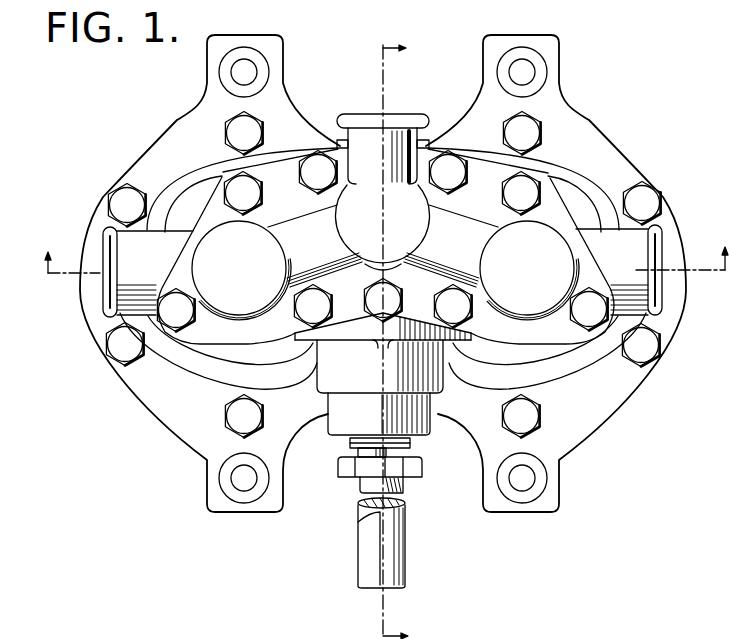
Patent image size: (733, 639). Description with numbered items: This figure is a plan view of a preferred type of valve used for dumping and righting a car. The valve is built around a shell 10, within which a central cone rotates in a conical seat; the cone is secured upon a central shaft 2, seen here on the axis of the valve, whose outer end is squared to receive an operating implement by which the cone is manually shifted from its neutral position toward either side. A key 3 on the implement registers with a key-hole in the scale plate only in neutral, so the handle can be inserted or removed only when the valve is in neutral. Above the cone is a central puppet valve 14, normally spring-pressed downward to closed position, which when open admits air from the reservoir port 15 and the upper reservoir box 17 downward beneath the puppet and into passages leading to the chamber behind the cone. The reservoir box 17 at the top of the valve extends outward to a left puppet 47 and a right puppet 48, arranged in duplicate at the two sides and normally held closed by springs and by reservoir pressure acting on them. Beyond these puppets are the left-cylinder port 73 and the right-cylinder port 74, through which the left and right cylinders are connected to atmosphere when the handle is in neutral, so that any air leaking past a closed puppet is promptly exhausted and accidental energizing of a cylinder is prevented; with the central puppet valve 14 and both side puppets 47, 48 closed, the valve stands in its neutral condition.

The central shaft 2 is at (403, 483).
The key 3 is at (377, 341).
The shell 10 is at (342, 421).
The central puppet valve 14 is at (383, 227).
The reservoir port 15 is at (393, 118).
The reservoir box 17 is at (383, 246).
The left puppet 47 is at (241, 270).
The right puppet 48 is at (529, 270).
The left-cylinder port 73 is at (108, 275).
The right-cylinder port 74 is at (656, 251).